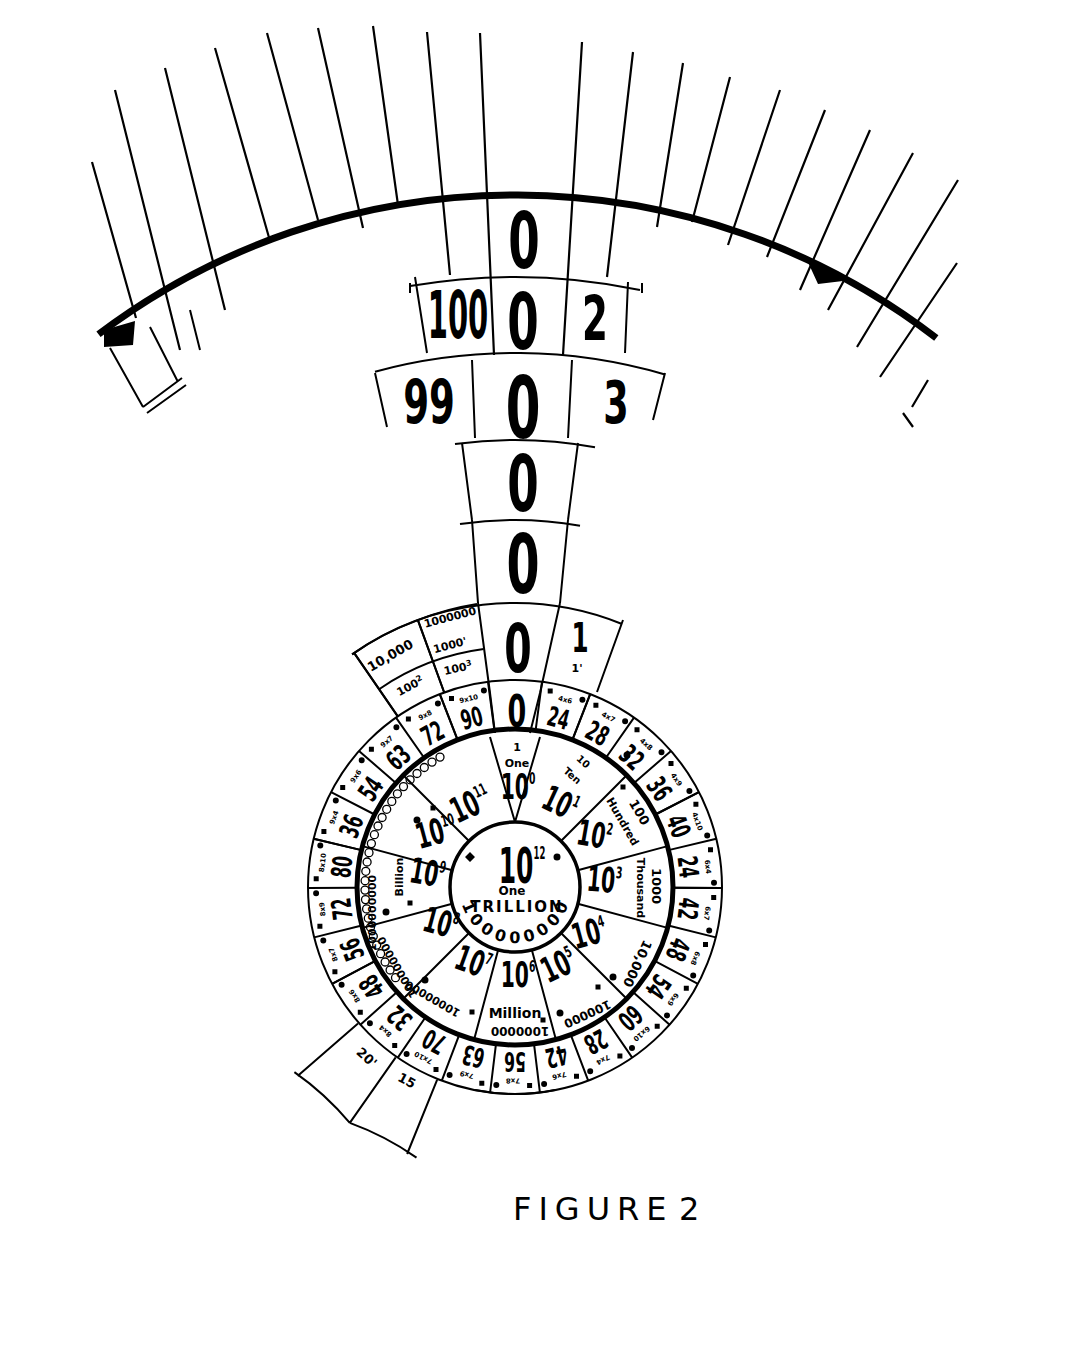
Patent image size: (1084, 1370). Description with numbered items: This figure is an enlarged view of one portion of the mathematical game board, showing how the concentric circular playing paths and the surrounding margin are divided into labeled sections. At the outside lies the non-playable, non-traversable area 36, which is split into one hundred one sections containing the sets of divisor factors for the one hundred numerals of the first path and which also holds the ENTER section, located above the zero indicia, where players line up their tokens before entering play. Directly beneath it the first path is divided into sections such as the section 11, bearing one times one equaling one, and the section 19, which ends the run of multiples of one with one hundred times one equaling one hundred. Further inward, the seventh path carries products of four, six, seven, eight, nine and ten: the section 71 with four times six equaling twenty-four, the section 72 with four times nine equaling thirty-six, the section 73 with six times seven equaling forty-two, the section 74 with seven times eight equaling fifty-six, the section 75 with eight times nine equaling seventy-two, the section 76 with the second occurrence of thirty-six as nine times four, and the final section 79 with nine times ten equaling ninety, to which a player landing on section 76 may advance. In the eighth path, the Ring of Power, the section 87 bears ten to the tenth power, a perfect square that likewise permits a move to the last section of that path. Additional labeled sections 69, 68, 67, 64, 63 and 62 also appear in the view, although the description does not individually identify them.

The non-traversable area 36 is at (561, 24).
The section of first playing area 19 is at (452, 240).
The section of first playing area 11 is at (596, 214).
The million sector 69 is at (447, 603).
The thousand sector 68 is at (432, 642).
The ten thousand sector 67 is at (405, 632).
The hundred squared sector 64 is at (386, 688).
The section of seventh playing area 79 is at (400, 717).
The section of seventh playing area 71 is at (575, 712).
The section of seventh playing area 72 is at (670, 807).
The section of seventh playing area 73 is at (700, 890).
The section of seventh playing area 76 is at (328, 807).
The section of eighth playing area 87 is at (318, 847).
The section of seventh playing area 75 is at (332, 930).
The four hundred square sector 63 is at (355, 1042).
The two hundred twenty-five square sector 62 is at (427, 1090).
The section of seventh playing area 74 is at (498, 1092).